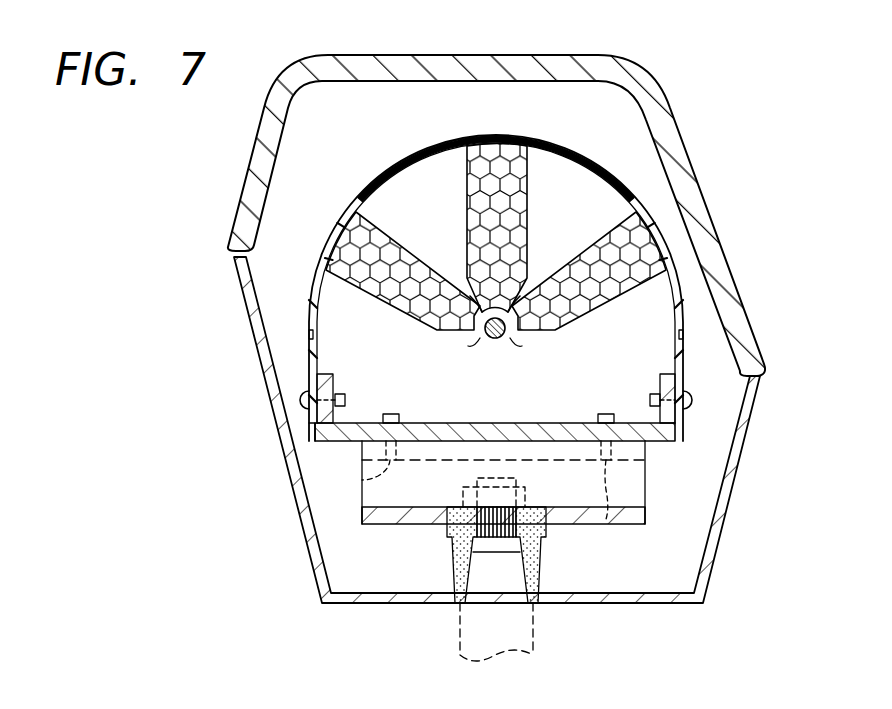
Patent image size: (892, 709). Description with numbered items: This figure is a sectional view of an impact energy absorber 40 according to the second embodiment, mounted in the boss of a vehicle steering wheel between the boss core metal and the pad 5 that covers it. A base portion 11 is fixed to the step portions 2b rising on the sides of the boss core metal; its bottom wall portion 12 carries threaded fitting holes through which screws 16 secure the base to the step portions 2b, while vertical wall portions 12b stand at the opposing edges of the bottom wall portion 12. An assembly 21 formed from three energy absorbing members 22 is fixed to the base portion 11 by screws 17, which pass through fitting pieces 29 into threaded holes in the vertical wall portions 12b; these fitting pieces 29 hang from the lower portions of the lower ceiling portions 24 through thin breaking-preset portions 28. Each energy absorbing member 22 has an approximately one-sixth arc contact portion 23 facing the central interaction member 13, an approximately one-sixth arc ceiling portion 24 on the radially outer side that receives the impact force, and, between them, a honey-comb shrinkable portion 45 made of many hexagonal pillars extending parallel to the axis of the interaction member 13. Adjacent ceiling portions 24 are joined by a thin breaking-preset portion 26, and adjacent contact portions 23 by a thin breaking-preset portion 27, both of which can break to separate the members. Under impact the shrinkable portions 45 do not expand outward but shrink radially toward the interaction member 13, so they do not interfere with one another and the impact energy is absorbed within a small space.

The pad 5 is at (343, 55).
The energy absorbing member 22 is at (488, 100).
The impact energy absorber 40 is at (624, 100).
The assembly 21 is at (644, 148).
The base portion 11 is at (735, 470).
The step portion 2b is at (645, 500).
The bottom wall portion 12 is at (673, 445).
The vertical wall portion 12b is at (313, 424).
The screw 16 is at (362, 480).
The ceiling portion 24 is at (547, 145).
The breaking-preset portion 26 is at (402, 166).
The breaking-preset portion 28 is at (312, 335).
The fitting piece 29 is at (316, 375).
The screw 17 is at (300, 401).
The honey-comb shrinkable portion 45 is at (467, 193).
The contact portion 23 is at (482, 290).
The breaking-preset portion 27 is at (478, 346).
The interaction member 13 is at (495, 340).